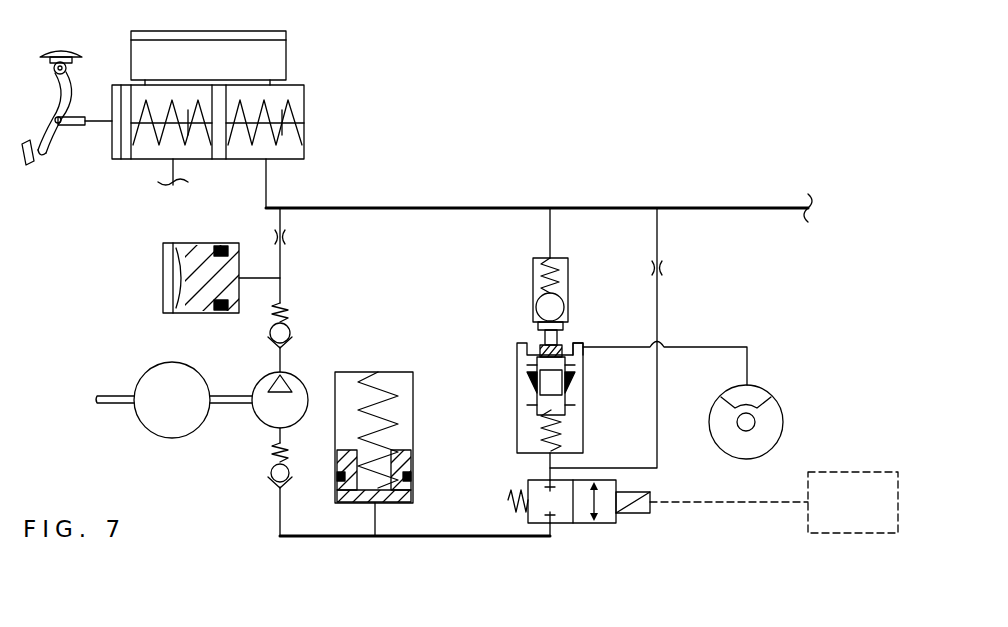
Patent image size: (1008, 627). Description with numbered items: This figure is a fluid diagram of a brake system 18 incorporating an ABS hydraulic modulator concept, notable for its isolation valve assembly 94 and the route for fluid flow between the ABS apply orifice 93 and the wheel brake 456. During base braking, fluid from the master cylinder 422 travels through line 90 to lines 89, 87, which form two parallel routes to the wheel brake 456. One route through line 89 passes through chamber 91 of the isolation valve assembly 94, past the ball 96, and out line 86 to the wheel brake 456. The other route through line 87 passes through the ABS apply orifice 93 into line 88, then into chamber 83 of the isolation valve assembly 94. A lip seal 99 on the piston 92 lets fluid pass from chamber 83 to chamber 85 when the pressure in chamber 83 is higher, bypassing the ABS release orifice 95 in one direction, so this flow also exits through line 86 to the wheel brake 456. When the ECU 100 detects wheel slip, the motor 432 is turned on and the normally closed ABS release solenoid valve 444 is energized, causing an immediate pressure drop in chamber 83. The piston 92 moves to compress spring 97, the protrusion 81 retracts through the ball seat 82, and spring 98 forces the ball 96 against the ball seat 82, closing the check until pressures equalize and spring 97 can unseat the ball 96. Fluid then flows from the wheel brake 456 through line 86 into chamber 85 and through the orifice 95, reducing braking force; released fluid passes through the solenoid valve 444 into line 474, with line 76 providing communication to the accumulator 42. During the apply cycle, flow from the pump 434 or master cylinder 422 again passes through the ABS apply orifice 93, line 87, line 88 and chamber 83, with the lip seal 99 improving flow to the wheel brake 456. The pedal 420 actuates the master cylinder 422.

The brake system 18 is at (539, 170).
The accumulator 42 is at (352, 372).
The line 76 is at (382, 530).
The protrusion 81 is at (562, 345).
The ball seat 82 is at (538, 322).
The chamber 83 is at (578, 435).
The chamber 85 is at (580, 347).
The line 86 is at (708, 346).
The line 87 is at (660, 303).
The line 88 is at (548, 462).
The line 89 is at (549, 223).
The line 90 is at (495, 187).
The chamber 91 is at (538, 283).
The piston 92 is at (585, 398).
The ABS apply orifice 93 is at (661, 270).
The isolation valve assembly 94 is at (529, 372).
The ABS release orifice 95 is at (584, 375).
The ball 96 is at (555, 300).
The spring 97 is at (543, 430).
The spring 98 is at (556, 262).
The lip seal 99 is at (531, 388).
The ECU 100 is at (850, 470).
The brake pedal 420 is at (26, 166).
The master cylinder 422 is at (306, 96).
The motor 432 is at (156, 438).
The pump 434 is at (258, 380).
The ABS release solenoid valve 444 is at (575, 524).
The wheel brake 456 is at (760, 394).
The line 474 is at (440, 538).